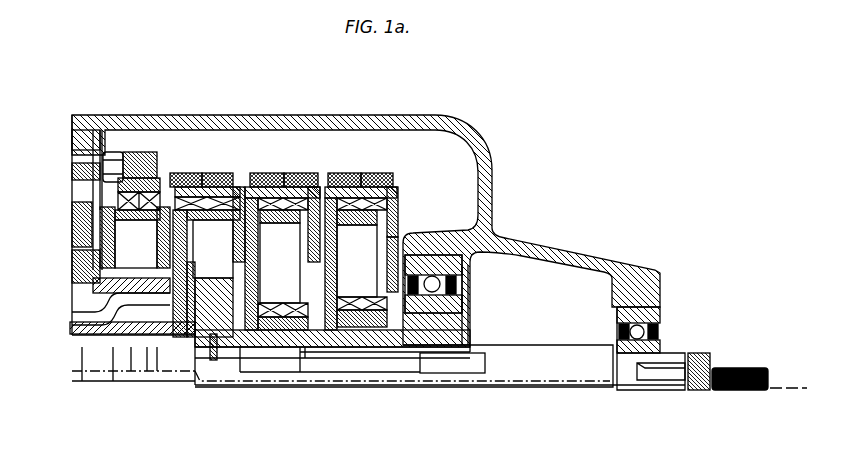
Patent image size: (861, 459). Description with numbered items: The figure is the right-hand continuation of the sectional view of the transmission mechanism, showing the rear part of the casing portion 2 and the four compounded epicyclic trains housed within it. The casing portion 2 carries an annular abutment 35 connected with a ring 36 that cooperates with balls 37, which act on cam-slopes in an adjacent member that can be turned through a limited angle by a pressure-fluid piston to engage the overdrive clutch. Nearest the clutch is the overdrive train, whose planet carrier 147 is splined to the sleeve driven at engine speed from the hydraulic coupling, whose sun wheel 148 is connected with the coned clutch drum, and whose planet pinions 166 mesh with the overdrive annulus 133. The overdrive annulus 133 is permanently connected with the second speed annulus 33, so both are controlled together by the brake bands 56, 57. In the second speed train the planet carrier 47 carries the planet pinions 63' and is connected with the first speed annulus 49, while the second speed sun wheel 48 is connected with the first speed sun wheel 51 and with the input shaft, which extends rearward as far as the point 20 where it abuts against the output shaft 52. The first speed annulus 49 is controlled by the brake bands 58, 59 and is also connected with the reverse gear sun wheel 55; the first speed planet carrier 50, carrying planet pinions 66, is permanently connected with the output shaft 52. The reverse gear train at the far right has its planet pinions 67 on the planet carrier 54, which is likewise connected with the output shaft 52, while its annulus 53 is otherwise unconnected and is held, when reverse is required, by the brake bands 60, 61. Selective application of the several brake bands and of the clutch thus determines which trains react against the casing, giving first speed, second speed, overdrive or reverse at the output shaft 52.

The casing portion 2 is at (79, 115).
The annular abutment 35 is at (96, 140).
The overdrive annulus 133 is at (147, 152).
The ring 36 is at (73, 148).
The balls 37 is at (73, 236).
The second speed planet carrier 47 is at (142, 205).
The brake band 56 is at (190, 173).
The brake band 57 is at (210, 173).
The second speed annulus 33 is at (228, 187).
The second speed planet pinions 63' is at (213, 244).
The overdrive planet carrier 147 is at (168, 300).
The first speed planet pinions 66 is at (268, 312).
The second speed sun wheel 48 is at (208, 310).
The first speed annulus 49 is at (281, 173).
The brake band 58 is at (262, 173).
The brake band 59 is at (302, 187).
The first speed sun wheel 51 is at (275, 330).
The first speed planet carrier 50 is at (289, 300).
The brake band 60 is at (342, 173).
The brake band 61 is at (375, 173).
The reverse gear sun wheel 55 is at (350, 310).
The reverse gear planet pinions 67 is at (368, 310).
The reverse gear annulus 53 is at (398, 188).
The reverse gear planet carrier 54 is at (398, 220).
The overdrive sun wheel 148 is at (128, 285).
The overdrive planet pinions 166 is at (119, 318).
The output shaft 52 is at (522, 365).
The abutment point 20 is at (300, 347).